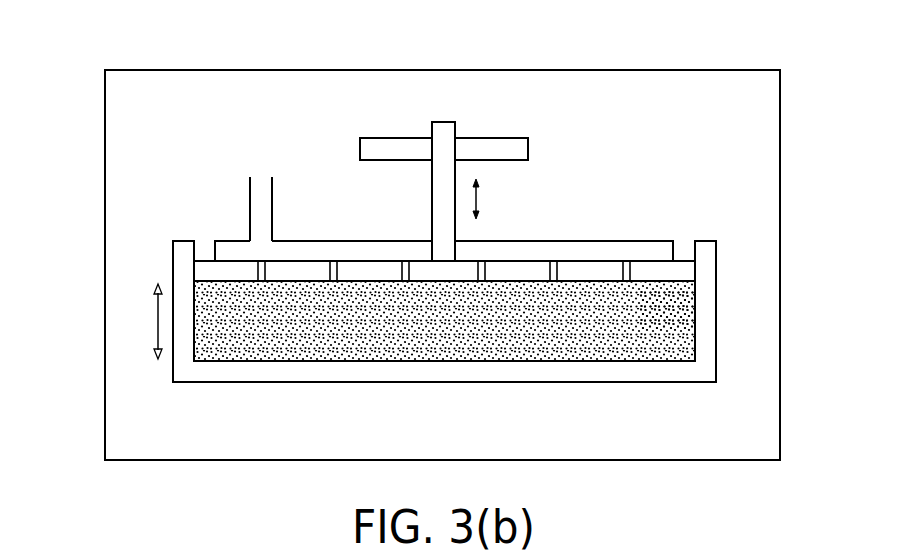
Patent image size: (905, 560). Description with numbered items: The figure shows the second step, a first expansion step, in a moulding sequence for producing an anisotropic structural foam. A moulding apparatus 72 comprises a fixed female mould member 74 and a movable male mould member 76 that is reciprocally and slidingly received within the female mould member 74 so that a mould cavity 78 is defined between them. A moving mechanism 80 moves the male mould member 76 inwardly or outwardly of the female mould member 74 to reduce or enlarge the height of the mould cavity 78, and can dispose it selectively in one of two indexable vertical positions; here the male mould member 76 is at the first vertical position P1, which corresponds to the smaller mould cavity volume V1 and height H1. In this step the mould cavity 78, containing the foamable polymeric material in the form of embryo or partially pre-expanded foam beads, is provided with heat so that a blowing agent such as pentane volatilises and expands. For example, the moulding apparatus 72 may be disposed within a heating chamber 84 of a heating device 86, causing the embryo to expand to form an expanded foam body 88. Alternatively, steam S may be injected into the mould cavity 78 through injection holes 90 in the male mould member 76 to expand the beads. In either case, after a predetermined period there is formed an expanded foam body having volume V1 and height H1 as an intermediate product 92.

The moulding apparatus 72 is at (103, 320).
The female mould member 74 is at (305, 372).
The male mould member 76 is at (206, 268).
The mould cavity 78 is at (650, 343).
The moving mechanism 80 is at (500, 148).
The heating chamber 84 is at (637, 83).
The heating device 86 is at (781, 143).
The expanded foam body 88 is at (230, 345).
The injection holes 90 is at (565, 261).
The intermediate product 92 is at (435, 343).
The steam S is at (261, 192).
The height H1 is at (144, 321).
The first vertical position P1 is at (675, 268).
The mould cavity volume V1 is at (673, 312).